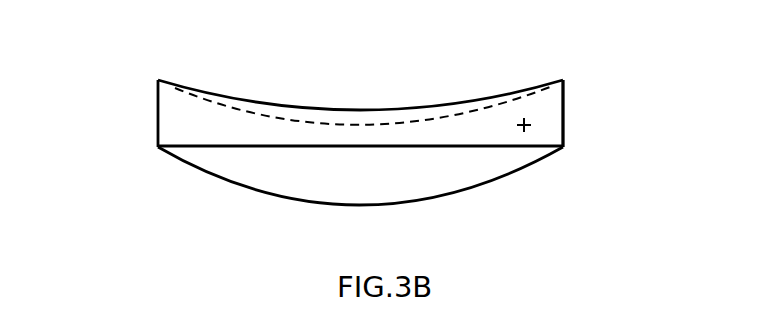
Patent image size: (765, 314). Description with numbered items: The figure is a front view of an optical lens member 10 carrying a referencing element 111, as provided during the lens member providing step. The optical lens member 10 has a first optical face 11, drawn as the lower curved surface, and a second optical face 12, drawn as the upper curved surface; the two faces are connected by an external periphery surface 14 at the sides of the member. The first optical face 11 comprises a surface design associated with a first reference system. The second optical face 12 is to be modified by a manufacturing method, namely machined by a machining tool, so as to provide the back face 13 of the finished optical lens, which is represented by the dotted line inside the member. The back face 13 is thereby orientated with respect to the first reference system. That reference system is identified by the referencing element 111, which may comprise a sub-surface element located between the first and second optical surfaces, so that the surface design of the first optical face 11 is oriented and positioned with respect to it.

The optical lens member 10 is at (122, 77).
The first optical face 11 is at (222, 180).
The second optical face 12 is at (492, 97).
The back face 13 is at (296, 122).
The external periphery surface 14 is at (567, 100).
The referencing element 111 is at (532, 132).